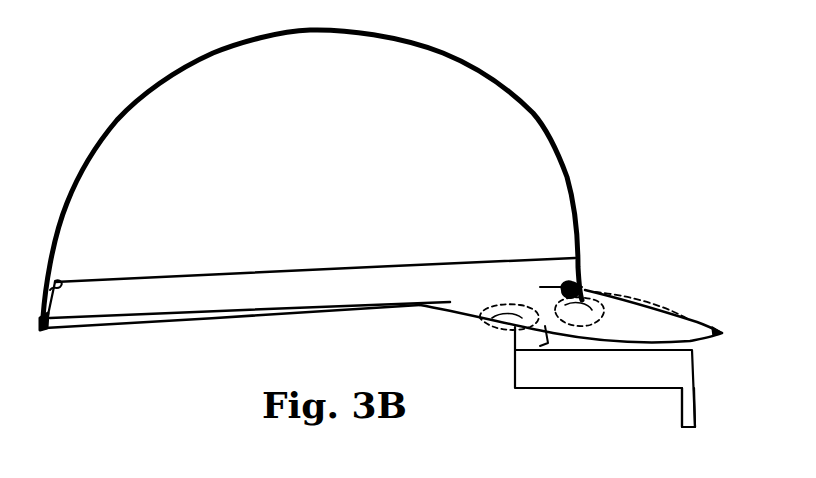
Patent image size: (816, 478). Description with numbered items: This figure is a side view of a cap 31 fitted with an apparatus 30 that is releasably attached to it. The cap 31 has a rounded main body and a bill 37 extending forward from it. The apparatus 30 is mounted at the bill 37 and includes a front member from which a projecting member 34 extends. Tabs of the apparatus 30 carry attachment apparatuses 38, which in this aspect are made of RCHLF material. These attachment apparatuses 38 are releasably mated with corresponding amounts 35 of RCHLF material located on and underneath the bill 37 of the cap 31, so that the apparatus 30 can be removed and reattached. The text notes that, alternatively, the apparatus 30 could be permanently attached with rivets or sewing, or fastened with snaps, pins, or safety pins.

The apparatus 30 is at (563, 388).
The cap 31 is at (542, 118).
The projecting member 34 is at (687, 417).
The amounts of RCHLF material 35 is at (613, 303).
The bill 37 is at (690, 301).
The attachment apparatus 38 is at (587, 294).